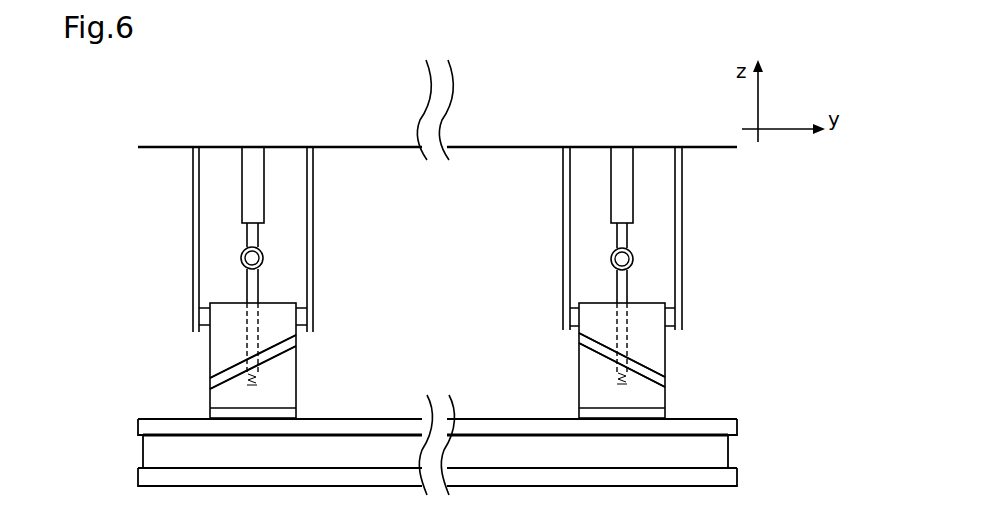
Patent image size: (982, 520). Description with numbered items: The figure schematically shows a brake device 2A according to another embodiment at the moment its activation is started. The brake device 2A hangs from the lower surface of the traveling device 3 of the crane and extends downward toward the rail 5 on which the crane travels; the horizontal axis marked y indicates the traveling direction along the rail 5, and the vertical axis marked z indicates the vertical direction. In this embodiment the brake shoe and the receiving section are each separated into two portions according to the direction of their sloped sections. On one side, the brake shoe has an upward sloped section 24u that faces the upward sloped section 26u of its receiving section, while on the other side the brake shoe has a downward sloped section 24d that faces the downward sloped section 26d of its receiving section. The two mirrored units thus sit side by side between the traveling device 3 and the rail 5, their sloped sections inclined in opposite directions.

The brake device 2A is at (140, 219).
The traveling device 3 is at (500, 138).
The rail 5 is at (152, 450).
The upward sloped section 24u is at (278, 358).
The downward sloped section 24d is at (595, 357).
The upward sloped section 26u is at (238, 353).
The downward sloped section 26d is at (637, 357).